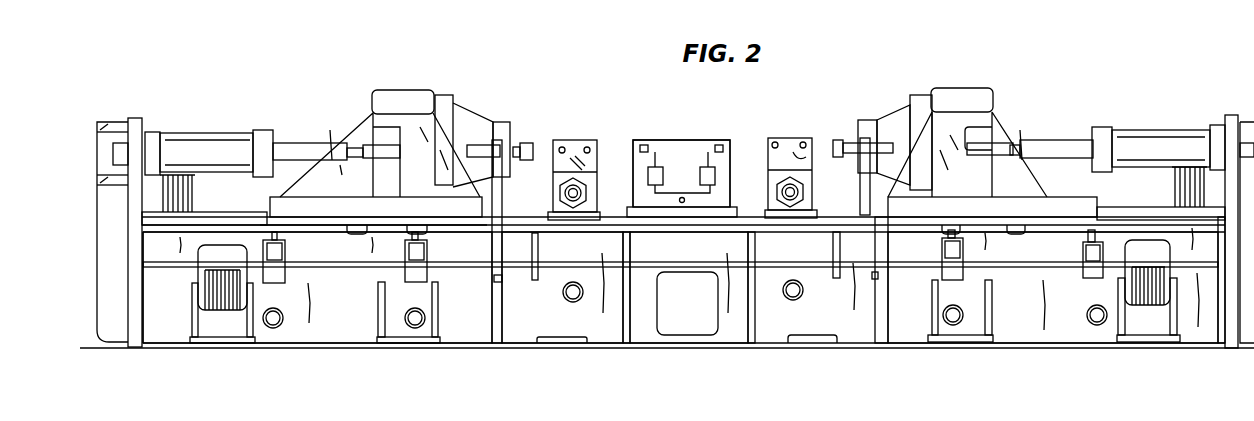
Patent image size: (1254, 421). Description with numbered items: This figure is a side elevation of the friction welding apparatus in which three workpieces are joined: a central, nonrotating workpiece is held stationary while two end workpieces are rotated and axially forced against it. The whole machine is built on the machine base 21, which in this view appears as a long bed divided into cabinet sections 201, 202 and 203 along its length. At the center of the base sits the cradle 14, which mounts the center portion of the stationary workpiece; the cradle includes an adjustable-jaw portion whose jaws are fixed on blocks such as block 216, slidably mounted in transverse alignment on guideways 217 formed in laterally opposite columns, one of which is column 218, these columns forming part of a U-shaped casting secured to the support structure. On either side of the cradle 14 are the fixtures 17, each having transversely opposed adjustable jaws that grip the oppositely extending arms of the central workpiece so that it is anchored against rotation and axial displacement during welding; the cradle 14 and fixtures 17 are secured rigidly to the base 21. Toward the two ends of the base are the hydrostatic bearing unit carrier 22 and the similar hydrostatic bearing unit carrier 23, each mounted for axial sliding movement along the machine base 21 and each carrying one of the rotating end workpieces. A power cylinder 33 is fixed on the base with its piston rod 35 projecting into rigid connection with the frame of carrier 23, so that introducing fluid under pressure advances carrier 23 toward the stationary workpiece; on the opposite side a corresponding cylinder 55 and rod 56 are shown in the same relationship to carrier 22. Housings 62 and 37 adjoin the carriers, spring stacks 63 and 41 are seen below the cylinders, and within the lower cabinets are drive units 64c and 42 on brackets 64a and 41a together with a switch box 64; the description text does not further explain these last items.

The cradle structure 14 is at (723, 167).
The fixtures 17 is at (575, 150).
The machine base 21 is at (607, 320).
The hydrostatic bearing unit carrier 22 is at (405, 105).
The hydrostatic bearing unit carrier 23 is at (965, 103).
The power cylinder 33 is at (1160, 135).
The piston rod 35 is at (1060, 147).
The right housing 37 is at (897, 112).
The right springs 41 is at (1177, 190).
The right motor bracket 41a is at (1133, 278).
The right motor 42 is at (1140, 305).
The left hydraulic cylinder 55 is at (210, 142).
The left piston rod 56 is at (305, 147).
The left housing 62 is at (475, 113).
The left springs 63 is at (190, 188).
The switch box 64 is at (243, 285).
The left motor bracket 64a is at (195, 300).
The left motor 64c is at (215, 305).
The left cabinet section 201 is at (342, 330).
The center cabinet section 202 is at (728, 333).
The right cabinet section 203 is at (1035, 333).
The block 216 is at (677, 160).
The guideways 217 is at (657, 167).
The column 218 is at (708, 145).